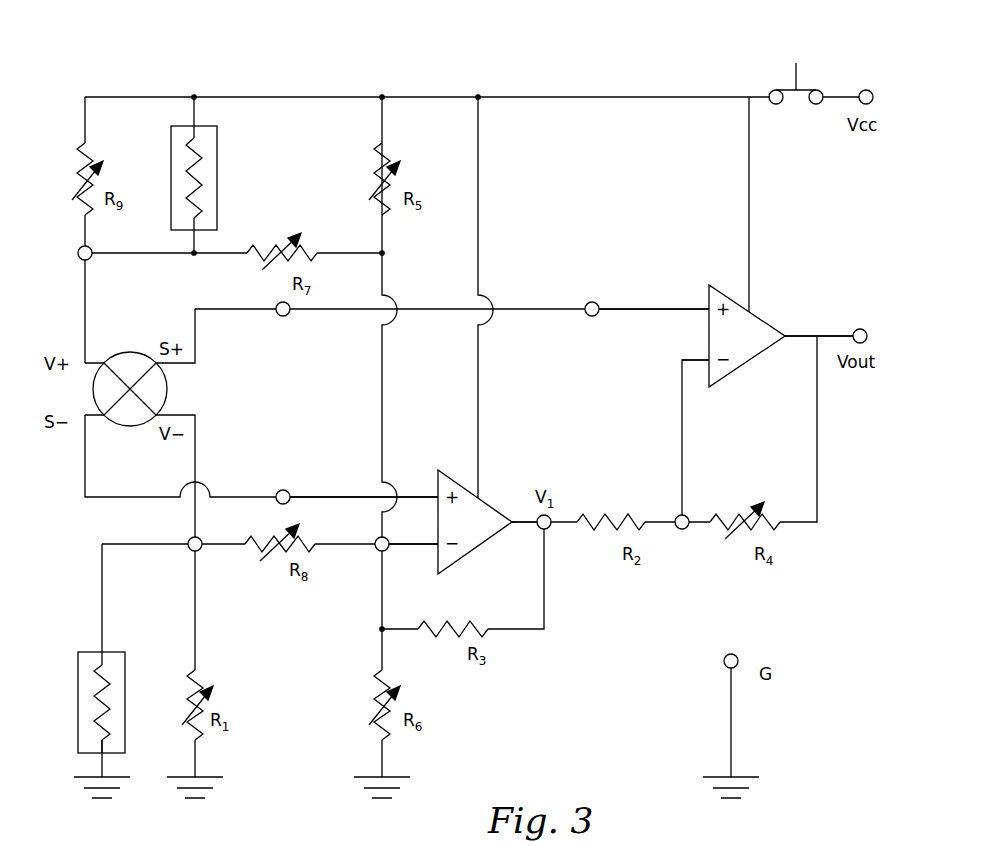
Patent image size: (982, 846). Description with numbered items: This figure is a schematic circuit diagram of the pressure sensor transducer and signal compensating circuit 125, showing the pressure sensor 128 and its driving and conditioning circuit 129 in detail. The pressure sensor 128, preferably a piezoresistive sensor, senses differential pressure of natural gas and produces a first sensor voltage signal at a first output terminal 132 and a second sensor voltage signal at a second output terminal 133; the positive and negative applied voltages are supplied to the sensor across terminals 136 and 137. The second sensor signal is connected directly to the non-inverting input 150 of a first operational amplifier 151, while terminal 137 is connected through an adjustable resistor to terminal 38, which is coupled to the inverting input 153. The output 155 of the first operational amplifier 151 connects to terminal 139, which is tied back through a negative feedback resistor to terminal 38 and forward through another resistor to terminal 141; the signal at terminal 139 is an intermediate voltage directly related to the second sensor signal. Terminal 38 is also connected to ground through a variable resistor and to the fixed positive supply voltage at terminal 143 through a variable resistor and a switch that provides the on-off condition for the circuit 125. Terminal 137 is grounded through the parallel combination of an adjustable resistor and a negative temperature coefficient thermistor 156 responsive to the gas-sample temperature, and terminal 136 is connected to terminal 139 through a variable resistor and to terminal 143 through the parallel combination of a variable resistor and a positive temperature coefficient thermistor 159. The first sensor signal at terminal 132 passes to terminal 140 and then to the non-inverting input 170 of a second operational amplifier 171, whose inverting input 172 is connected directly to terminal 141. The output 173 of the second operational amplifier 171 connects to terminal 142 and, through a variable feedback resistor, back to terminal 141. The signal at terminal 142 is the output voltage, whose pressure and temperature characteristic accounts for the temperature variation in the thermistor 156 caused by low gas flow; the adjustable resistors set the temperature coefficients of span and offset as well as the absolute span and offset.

The pressure sensor transducer and signal compensating circuit 125 is at (114, 72).
The driving and conditioning circuit 129 is at (446, 72).
The terminal 143 is at (866, 90).
The positive temperature coefficient thermistor 159 is at (217, 165).
The terminal 136 is at (78, 256).
The first output terminal 132 is at (283, 316).
The second output terminal 133 is at (283, 490).
The terminal 137 is at (190, 538).
The terminal 38 is at (376, 538).
The pressure sensor 128 is at (93, 389).
The terminal 140 is at (594, 302).
The non-inverting input 170 is at (638, 309).
The second operational amplifier 171 is at (758, 312).
The inverting input 172 is at (693, 358).
The output 173 is at (803, 342).
The terminal 142 is at (860, 328).
The first operational amplifier 151 is at (482, 495).
The non-inverting input 150 is at (408, 496).
The inverting input 153 is at (408, 551).
The output 155 is at (520, 530).
The terminal 139 is at (548, 529).
The terminal 141 is at (682, 530).
The negative temperature coefficient thermistor 156 is at (78, 675).